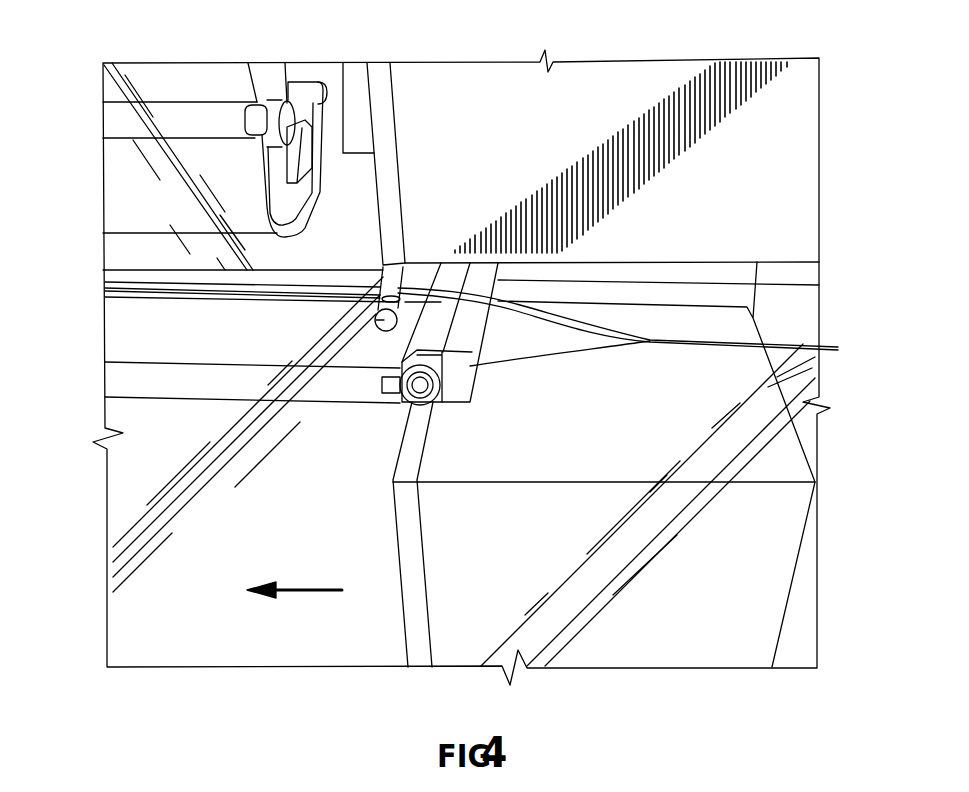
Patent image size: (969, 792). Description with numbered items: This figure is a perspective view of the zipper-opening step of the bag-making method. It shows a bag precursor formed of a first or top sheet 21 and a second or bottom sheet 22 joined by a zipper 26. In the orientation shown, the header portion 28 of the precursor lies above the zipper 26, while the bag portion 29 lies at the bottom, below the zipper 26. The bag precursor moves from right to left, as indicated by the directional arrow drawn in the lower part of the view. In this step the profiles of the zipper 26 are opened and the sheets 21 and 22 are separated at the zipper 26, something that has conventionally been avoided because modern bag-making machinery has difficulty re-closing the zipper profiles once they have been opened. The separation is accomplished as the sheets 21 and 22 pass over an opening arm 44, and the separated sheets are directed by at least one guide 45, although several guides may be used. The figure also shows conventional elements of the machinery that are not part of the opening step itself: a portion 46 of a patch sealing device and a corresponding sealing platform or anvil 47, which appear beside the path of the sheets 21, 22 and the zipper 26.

The first or top sheet 21 is at (797, 334).
The second or bottom sheet 22 is at (545, 350).
The zipper 26 is at (727, 348).
The header portion 28 is at (808, 296).
The bag portion 29 is at (725, 624).
The opening arm 44 is at (453, 404).
The guide 45 is at (372, 320).
The portion of a patch sealing device 46 is at (122, 200).
The sealing platform or anvil 47 is at (128, 378).